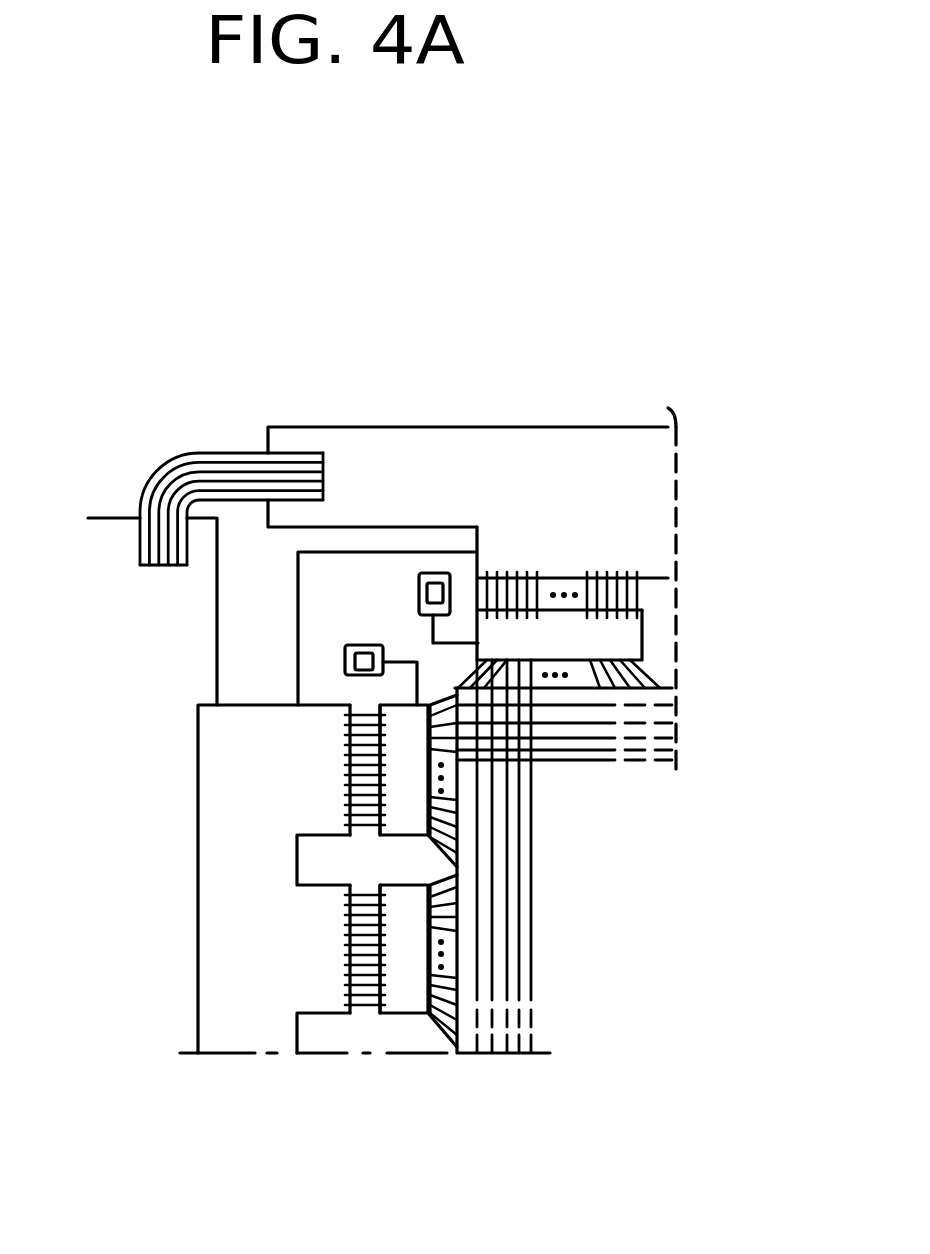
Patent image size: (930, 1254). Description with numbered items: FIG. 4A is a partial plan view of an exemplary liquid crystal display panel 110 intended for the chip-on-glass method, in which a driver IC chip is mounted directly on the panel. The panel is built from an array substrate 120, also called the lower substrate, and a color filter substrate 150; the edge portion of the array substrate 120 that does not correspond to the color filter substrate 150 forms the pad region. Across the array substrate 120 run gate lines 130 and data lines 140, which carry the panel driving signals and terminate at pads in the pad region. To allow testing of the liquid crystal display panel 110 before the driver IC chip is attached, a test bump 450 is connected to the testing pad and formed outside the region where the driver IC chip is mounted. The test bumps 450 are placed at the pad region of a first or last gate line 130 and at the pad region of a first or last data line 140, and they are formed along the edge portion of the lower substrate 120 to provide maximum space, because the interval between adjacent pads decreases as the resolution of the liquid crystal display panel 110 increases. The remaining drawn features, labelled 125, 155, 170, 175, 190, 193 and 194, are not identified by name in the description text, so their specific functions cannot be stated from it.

The liquid crystal display panel 110 is at (590, 988).
The array substrate 120 is at (337, 552).
The interior region 125 is at (320, 612).
The gate line 130 is at (580, 760).
The data line 140 is at (532, 867).
The color filter substrate 150 is at (453, 1052).
The lower connection portion 155 is at (460, 1047).
The power line 170 is at (108, 516).
The bent wiring bundle 175 is at (237, 453).
The frame / sealing member 190 is at (543, 427).
The contact portion 193 is at (400, 836).
The upper contact portion 194 is at (570, 618).
The test bump 450 is at (364, 645).